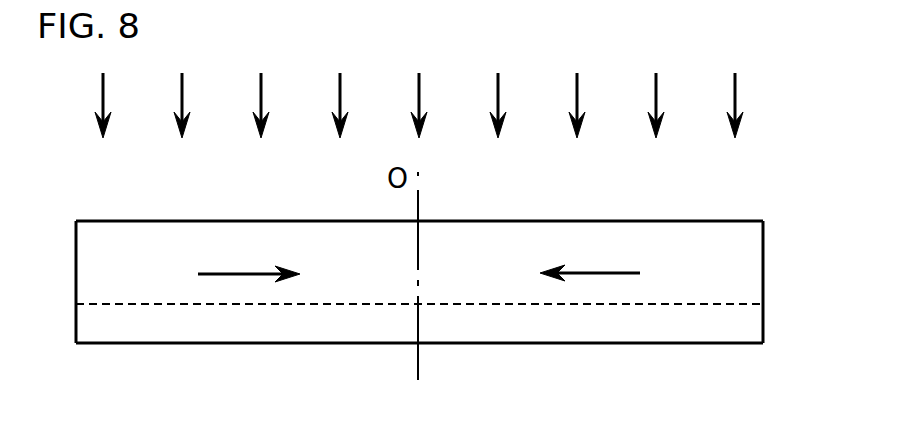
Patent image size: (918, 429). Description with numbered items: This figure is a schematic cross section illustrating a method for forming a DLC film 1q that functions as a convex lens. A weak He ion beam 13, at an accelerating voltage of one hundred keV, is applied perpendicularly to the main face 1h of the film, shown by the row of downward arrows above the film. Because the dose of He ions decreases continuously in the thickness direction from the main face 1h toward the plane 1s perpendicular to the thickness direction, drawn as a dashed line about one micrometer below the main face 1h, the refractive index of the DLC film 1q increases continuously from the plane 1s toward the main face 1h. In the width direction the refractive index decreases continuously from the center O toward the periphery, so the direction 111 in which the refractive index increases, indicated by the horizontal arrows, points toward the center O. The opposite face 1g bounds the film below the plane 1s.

The He ion beam 13 is at (737, 92).
The main face 1h is at (712, 220).
The DLC film 1q is at (765, 255).
The plane perpendicular to the thickness direction 1s is at (730, 304).
The back surface 1g is at (727, 342).
The direction in which the refractive index increases 111 is at (590, 273).